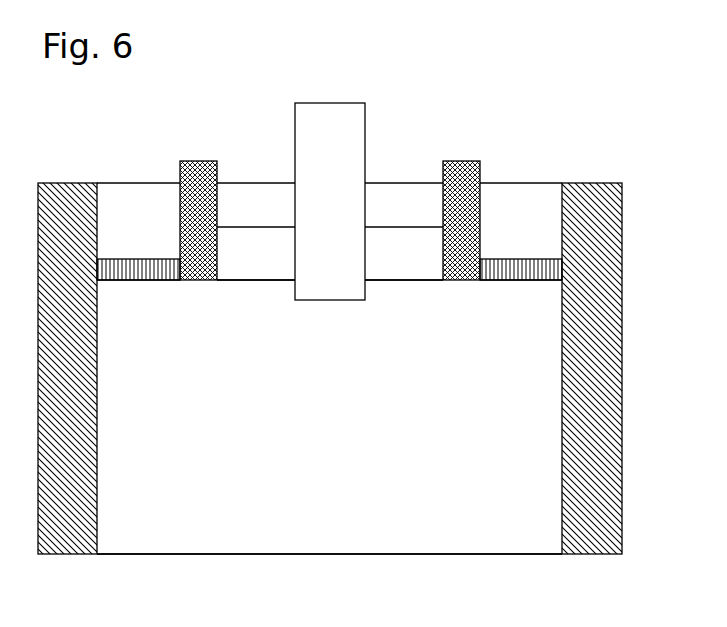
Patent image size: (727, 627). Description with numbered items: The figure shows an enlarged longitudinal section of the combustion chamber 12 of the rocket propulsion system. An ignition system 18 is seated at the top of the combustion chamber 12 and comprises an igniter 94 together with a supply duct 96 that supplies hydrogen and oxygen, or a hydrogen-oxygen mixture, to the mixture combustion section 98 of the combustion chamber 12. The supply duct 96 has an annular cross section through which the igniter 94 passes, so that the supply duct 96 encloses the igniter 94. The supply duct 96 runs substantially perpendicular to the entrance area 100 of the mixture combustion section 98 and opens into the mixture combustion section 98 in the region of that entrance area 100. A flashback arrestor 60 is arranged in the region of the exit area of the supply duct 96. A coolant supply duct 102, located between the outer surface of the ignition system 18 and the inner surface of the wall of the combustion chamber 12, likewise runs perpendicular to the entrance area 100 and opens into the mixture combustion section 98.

The combustion chamber 12 is at (624, 270).
The ignition system 18 is at (461, 123).
The flashback arrestor 60 is at (256, 266).
The igniter 94 is at (331, 121).
The supply duct 96 is at (256, 203).
The mixture combustion section 98 is at (323, 540).
The entrance area 100 is at (197, 282).
The coolant supply duct 102 is at (512, 203).